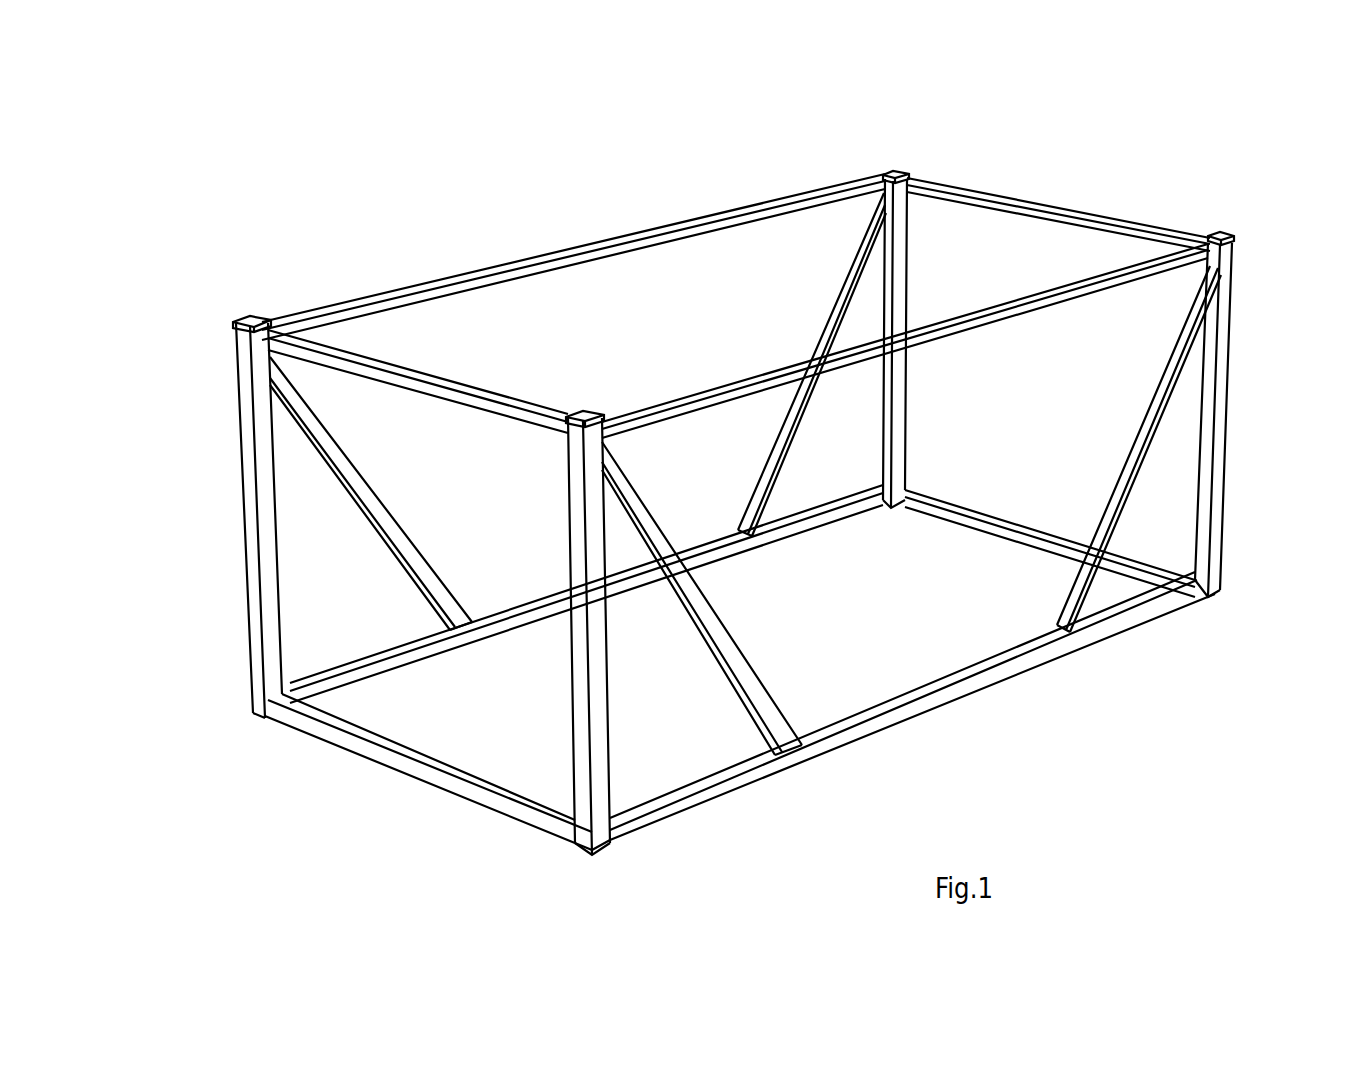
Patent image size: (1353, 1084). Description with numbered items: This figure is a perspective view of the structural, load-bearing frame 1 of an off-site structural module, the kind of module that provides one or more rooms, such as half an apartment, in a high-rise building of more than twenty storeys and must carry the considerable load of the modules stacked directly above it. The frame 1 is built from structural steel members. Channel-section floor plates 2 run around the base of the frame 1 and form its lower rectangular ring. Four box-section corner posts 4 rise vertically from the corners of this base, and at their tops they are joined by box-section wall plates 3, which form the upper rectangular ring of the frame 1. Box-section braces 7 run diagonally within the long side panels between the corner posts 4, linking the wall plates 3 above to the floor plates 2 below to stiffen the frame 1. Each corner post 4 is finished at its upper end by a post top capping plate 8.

The frame 1 is at (162, 207).
The floor plates 2 is at (1010, 520).
The wall plates 3 is at (585, 244).
The corner posts 4 is at (906, 452).
The braces 7 is at (831, 303).
The post top capping plates 8 is at (894, 172).